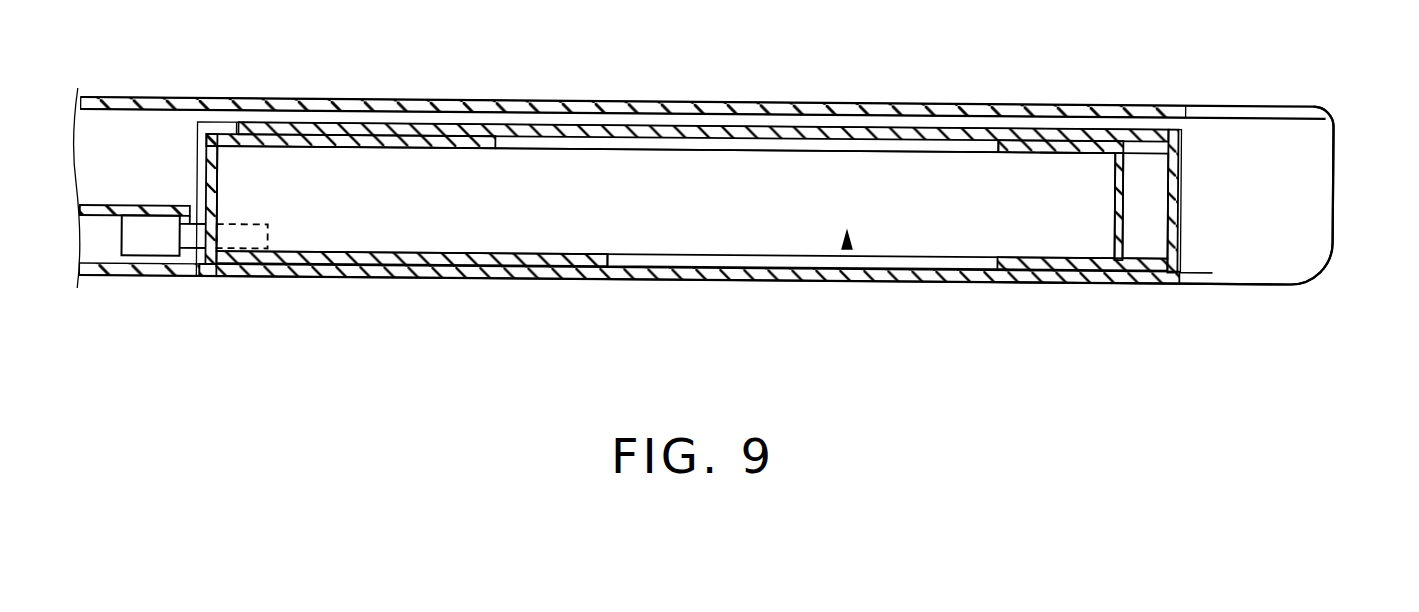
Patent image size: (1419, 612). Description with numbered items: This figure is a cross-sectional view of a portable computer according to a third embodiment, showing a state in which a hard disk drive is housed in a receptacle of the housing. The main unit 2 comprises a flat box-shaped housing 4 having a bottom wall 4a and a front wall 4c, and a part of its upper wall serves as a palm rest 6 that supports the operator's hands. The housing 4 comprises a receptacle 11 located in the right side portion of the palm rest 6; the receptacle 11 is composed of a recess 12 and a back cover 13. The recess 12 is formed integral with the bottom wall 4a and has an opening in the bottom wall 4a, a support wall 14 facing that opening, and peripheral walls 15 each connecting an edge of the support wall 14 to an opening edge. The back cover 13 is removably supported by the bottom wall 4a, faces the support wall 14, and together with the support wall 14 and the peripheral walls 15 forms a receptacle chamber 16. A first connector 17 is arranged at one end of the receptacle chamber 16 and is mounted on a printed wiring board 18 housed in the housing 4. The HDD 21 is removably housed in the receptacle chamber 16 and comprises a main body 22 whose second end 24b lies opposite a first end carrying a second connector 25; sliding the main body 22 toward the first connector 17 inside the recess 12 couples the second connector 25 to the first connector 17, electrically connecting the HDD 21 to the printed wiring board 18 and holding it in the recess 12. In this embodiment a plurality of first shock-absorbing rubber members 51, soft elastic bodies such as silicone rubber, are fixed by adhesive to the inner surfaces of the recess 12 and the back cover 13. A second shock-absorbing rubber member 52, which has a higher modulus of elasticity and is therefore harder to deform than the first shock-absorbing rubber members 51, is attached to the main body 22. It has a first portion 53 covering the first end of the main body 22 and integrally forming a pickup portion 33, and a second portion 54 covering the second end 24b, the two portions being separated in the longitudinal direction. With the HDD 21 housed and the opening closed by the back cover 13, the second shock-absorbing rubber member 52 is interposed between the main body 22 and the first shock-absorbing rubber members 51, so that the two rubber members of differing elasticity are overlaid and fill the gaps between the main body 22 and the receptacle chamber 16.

The main unit 2 is at (1300, 283).
The housing 4 is at (1315, 108).
The bottom wall 4a is at (97, 275).
The front wall 4c is at (1325, 205).
The palm rest 6 is at (552, 128).
The receptacle 11 is at (1065, 333).
The recess 12 is at (1150, 268).
The back cover 13 is at (1070, 282).
The support wall 14 is at (787, 128).
The peripheral walls 15 is at (197, 158).
The receptacle chamber 16 is at (1158, 156).
The first connector 17 is at (148, 255).
The printed wiring board 18 is at (90, 205).
The HDD 21 is at (845, 245).
The main body 22 is at (638, 163).
The second end 24b is at (1057, 163).
The second connector 25 is at (255, 268).
The pickup portion 33 is at (587, 262).
The first shock-absorbing rubber members 51 is at (328, 133).
The second shock-absorbing rubber member 52 is at (460, 262).
The first portion 53 is at (242, 128).
The second portion 54 is at (1008, 136).